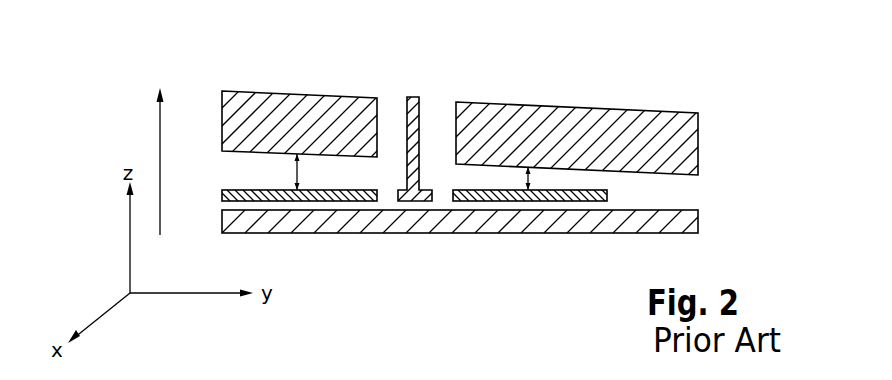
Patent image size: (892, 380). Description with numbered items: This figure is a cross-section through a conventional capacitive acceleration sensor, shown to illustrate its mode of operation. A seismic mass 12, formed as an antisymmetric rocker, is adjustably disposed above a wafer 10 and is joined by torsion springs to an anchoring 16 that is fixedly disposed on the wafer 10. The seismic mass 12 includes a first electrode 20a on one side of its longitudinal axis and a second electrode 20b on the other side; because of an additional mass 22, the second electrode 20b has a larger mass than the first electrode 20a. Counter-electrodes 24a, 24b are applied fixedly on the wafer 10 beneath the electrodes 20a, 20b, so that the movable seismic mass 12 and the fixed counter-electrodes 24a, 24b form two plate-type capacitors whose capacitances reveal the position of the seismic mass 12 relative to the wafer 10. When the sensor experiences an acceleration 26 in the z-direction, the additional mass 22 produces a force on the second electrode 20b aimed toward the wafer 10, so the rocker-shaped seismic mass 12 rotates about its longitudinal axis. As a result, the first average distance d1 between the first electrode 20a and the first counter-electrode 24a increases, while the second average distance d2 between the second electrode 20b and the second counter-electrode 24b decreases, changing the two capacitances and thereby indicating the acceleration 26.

The wafer 10 is at (582, 212).
The seismic mass 12 is at (457, 100).
The anchoring 16 is at (408, 201).
The first electrode 20a is at (225, 87).
The second electrode 20b is at (457, 96).
The additional mass 22 is at (606, 171).
The first counter-electrode 24a is at (335, 201).
The second counter-electrode 24b is at (480, 201).
The acceleration 26 is at (160, 142).
The first average distance d1 is at (297, 170).
The second average distance d2 is at (528, 178).